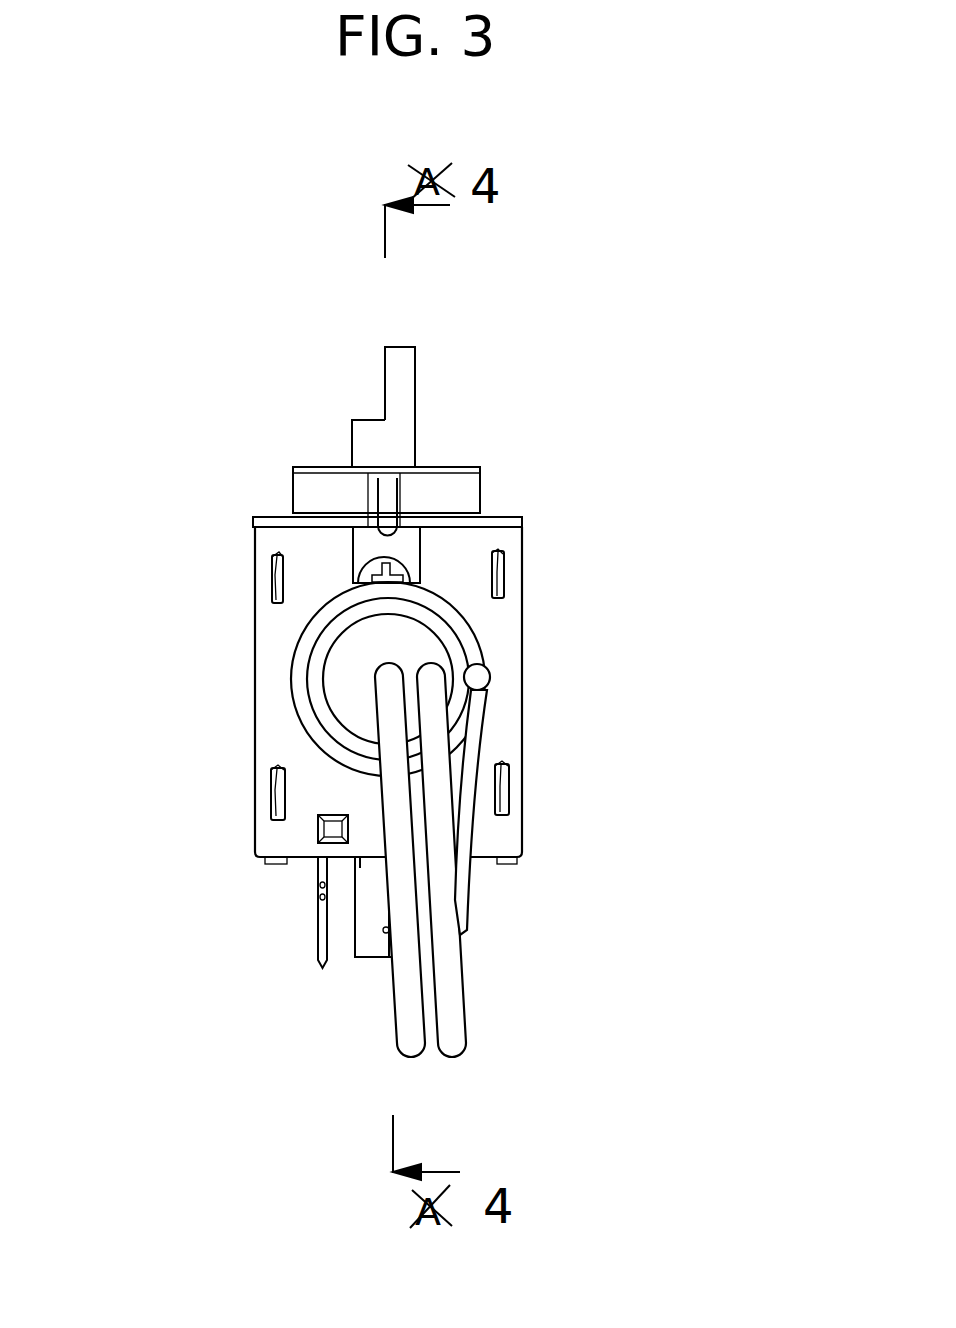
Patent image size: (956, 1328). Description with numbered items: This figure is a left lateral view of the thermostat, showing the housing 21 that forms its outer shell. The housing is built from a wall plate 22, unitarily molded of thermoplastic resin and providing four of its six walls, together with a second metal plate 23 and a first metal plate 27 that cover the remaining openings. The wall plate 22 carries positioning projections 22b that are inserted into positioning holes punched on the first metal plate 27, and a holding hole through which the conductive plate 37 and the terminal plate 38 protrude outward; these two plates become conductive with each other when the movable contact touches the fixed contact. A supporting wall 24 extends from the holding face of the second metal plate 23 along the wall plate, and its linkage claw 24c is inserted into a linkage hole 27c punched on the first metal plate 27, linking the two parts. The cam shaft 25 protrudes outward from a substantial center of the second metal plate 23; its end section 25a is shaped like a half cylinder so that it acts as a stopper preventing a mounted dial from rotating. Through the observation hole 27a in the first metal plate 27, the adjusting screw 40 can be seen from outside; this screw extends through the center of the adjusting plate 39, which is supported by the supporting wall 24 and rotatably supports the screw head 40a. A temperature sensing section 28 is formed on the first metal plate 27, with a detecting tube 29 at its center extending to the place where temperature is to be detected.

The housing 21 is at (399, 674).
The wall plate 22 is at (188, 876).
The positioning projections 22b is at (320, 833).
The second metal plate 23 is at (480, 467).
The supporting wall 24 is at (448, 682).
The linkage claw 24c is at (267, 570).
The cam shaft 25 is at (417, 403).
The end section 25a is at (400, 347).
The first metal plate 27 is at (268, 650).
The observation hole 27a is at (352, 558).
The linkage hole 27c is at (270, 553).
The temperature sensing section 28 is at (340, 675).
The detecting tube 29 is at (470, 967).
The conductive plate 37 is at (370, 942).
The terminal plate 38 is at (313, 932).
The adjusting plate 39 is at (385, 500).
The adjusting screw 40 is at (265, 478).
The screw head 40a is at (360, 562).